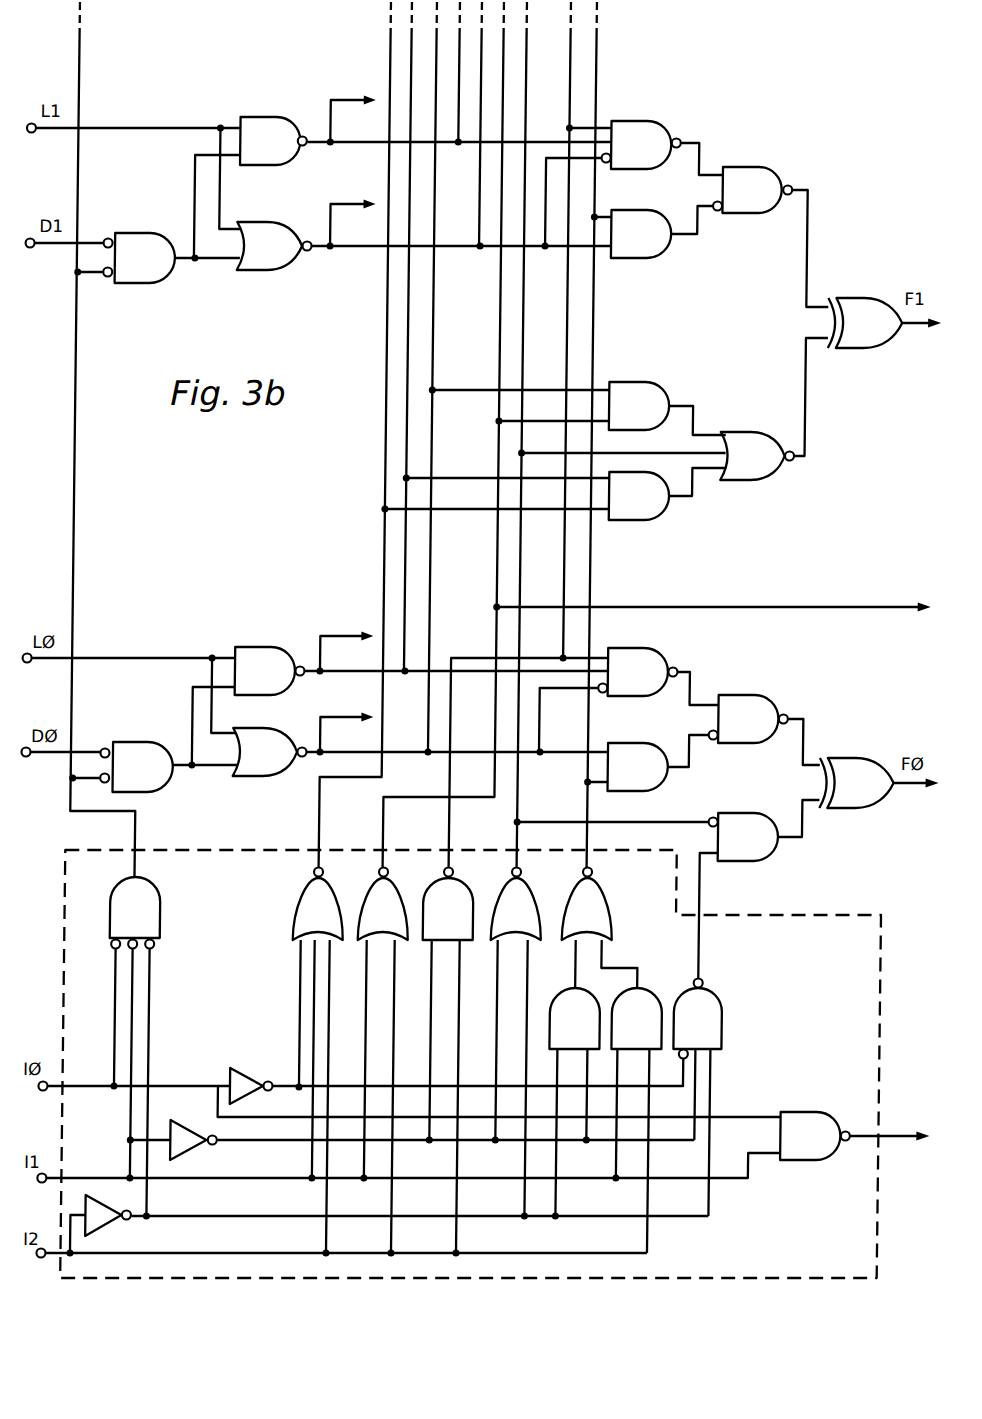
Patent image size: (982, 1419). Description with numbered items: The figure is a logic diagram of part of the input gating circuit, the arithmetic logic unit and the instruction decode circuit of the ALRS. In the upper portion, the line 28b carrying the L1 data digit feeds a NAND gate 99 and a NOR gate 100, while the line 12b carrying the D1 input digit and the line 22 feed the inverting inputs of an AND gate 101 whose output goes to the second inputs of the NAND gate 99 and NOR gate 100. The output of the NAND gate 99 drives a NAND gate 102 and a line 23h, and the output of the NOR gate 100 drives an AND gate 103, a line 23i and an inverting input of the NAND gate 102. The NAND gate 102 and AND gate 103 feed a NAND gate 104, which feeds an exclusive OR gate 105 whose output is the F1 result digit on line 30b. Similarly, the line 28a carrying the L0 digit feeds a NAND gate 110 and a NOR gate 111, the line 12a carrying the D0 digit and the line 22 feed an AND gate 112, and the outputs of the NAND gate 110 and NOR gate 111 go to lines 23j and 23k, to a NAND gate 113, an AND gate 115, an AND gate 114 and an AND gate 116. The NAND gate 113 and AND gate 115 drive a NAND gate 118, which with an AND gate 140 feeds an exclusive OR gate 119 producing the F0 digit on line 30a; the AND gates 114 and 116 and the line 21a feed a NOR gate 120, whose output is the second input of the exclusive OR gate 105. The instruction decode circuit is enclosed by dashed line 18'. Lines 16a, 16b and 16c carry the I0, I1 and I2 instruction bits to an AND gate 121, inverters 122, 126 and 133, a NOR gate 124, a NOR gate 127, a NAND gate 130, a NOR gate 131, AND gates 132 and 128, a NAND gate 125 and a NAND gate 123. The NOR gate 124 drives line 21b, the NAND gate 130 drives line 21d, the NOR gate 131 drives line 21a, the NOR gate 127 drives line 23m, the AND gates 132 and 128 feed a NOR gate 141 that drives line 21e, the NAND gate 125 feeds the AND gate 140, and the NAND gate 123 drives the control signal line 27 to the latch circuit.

The line 22 is at (80, 90).
The line 28b is at (92, 126).
The line 12b is at (64, 250).
The NAND gate 99 is at (250, 187).
The NOR gate 100 is at (424, 246).
The AND gate 101 is at (171, 258).
The NAND gate 102 is at (634, 183).
The AND gate 103 is at (653, 232).
The NAND gate 104 is at (771, 237).
The exclusive OR gate 105 is at (865, 323).
The line 30b is at (919, 342).
The line 23h is at (353, 108).
The line 23i is at (353, 213).
The line 21a is at (527, 84).
The line 21d is at (571, 115).
The line 21e is at (597, 86).
The line 21b is at (329, 838).
The AND gate 116 is at (577, 408).
The AND gate 114 is at (555, 494).
The NOR gate 120 is at (674, 409).
The line 23m is at (742, 607).
The line 28a is at (54, 662).
The line 12a is at (64, 767).
The NAND gate 110 is at (248, 706).
The NOR gate 111 is at (270, 752).
The AND gate 112 is at (169, 767).
The line 23j is at (347, 641).
The line 23k is at (347, 722).
The NAND gate 113 is at (629, 700).
The AND gate 115 is at (648, 763).
The NAND gate 118 is at (764, 730).
The AND gate 140 is at (667, 889).
The exclusive OR gate 119 is at (856, 783).
The line 30a is at (901, 788).
The dashed line 18' is at (491, 1064).
The AND gate 121 is at (133, 1048).
The NOR gate 124 is at (316, 1062).
The NOR gate 127 is at (381, 1062).
The NAND gate 130 is at (446, 1062).
The NOR gate 131 is at (514, 1044).
The NOR gate 141 is at (599, 928).
The AND gate 132 is at (573, 1104).
The AND gate 128 is at (635, 1120).
The NAND gate 125 is at (696, 1098).
The inverter 122 is at (276, 1052).
The inverter 126 is at (212, 1150).
The inverter 133 is at (128, 1227).
The NAND gate 123 is at (815, 1136).
The control signal line 27 is at (905, 1140).
The line 16a is at (68, 1090).
The line 16b is at (68, 1182).
The line 16c is at (68, 1257).